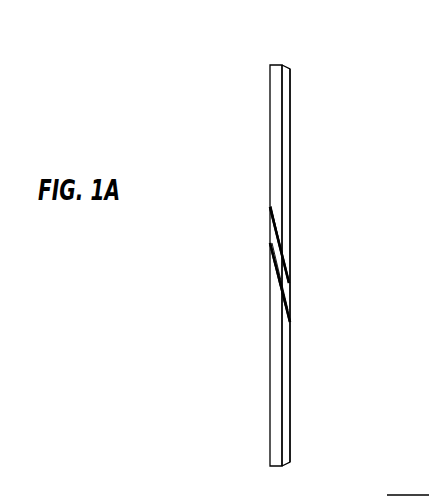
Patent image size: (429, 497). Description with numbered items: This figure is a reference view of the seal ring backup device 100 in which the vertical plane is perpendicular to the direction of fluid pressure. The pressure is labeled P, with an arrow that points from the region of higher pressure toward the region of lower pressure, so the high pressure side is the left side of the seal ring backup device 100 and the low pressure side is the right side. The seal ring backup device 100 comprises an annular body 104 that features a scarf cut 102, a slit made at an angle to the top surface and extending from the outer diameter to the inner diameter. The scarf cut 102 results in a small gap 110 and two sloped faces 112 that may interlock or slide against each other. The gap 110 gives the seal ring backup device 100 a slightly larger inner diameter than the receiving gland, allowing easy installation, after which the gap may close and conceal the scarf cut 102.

The seal ring backup device 100 is at (177, 112).
The scarf cut 102 is at (273, 240).
The annular body 104 is at (290, 115).
The gap 110 is at (297, 303).
The sloped faces 112 is at (270, 283).
The pressure P is at (212, 432).